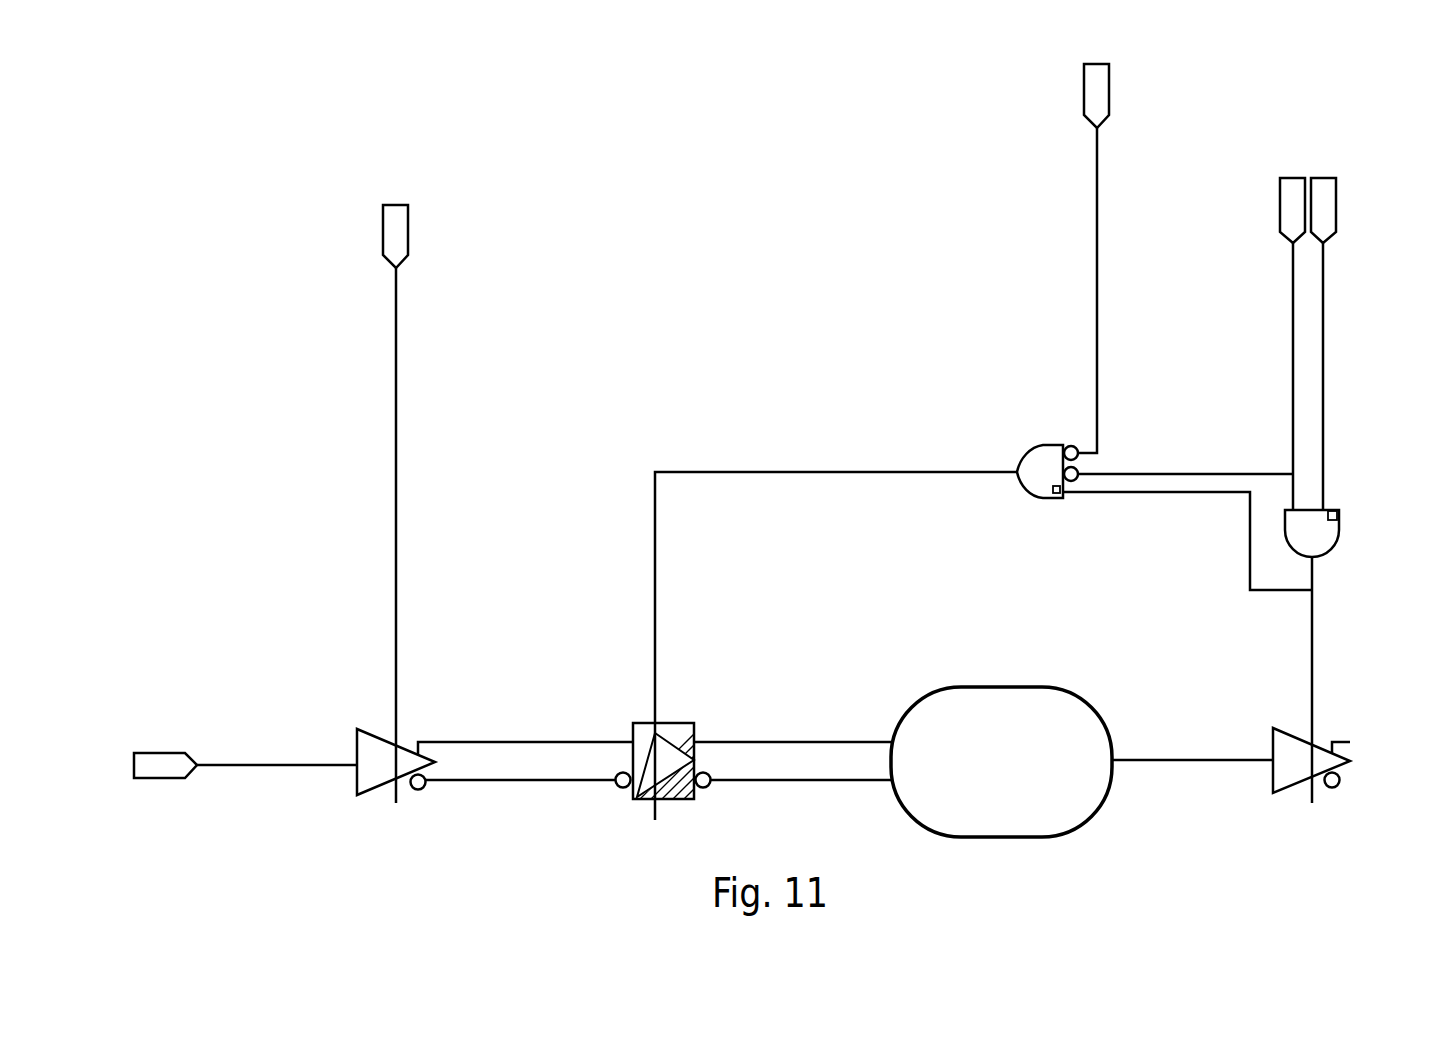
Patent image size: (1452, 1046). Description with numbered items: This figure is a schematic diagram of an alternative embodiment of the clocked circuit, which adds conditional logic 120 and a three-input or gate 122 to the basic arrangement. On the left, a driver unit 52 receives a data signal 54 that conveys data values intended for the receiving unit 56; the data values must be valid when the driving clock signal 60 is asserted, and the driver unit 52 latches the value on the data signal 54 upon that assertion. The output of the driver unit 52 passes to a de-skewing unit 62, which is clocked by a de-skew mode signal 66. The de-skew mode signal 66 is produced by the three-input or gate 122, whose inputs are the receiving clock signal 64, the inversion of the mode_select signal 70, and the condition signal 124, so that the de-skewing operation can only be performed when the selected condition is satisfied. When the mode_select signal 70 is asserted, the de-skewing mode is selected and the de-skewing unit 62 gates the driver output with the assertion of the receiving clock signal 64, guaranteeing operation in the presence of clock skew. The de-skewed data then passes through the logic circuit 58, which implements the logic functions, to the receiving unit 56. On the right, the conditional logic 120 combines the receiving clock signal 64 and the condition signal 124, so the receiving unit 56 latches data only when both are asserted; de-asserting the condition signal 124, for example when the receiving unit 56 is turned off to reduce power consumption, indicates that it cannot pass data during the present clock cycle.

The driver unit 52 is at (365, 727).
The data signal 54 is at (317, 767).
The receiving unit 56 is at (1290, 790).
The logic circuit 58 is at (1043, 838).
The driving clock signal 60 is at (397, 550).
The de-skewing unit 62 is at (670, 722).
The receiving clock signal 64 is at (1323, 398).
The de-skew mode signal 66 is at (885, 470).
The mode_select signal 70 is at (1096, 313).
The conditional logic 120 is at (1340, 528).
The three-input or gate 122 is at (1048, 443).
The condition signal 124 is at (1292, 397).